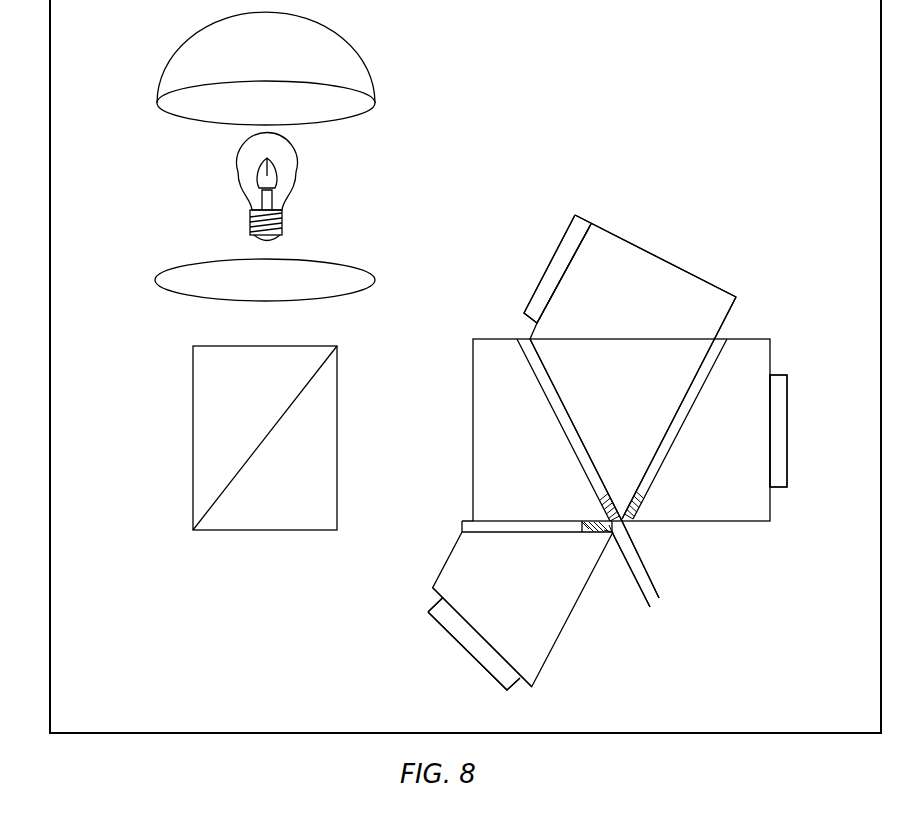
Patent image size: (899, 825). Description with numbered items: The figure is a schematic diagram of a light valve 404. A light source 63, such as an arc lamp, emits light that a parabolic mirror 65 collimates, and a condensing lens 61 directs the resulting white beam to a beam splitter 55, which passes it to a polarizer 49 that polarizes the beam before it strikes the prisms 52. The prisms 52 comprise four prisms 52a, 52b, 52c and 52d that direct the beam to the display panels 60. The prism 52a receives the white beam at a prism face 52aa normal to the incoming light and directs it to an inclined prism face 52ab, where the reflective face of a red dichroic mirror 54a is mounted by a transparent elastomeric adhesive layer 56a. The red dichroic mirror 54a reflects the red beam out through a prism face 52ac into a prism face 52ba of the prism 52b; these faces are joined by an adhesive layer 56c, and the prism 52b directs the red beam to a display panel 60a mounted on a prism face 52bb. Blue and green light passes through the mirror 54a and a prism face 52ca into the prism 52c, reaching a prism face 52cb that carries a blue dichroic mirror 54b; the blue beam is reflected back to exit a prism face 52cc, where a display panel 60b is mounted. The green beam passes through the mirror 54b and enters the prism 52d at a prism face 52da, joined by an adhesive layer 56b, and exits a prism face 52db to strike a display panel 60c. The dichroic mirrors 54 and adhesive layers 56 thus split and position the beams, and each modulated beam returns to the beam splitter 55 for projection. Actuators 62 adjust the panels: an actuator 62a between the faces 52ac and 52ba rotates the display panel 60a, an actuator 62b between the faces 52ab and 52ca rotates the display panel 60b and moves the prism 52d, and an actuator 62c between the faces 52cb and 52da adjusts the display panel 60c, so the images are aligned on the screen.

The light valve 404 is at (183, 760).
The parabolic mirror 65 is at (248, 68).
The light source 63 is at (240, 185).
The condensing lens 61 is at (239, 275).
The beam splitter 55 is at (265, 454).
The polarizer 49 is at (594, 430).
The prisms 52 is at (612, 428).
The prism 52a is at (520, 398).
The prism 52b is at (530, 609).
The prism 52c is at (633, 364).
The prism 52d is at (730, 415).
The prism face 52aa is at (510, 440).
The prism face 52ab is at (557, 501).
The prism face 52ac is at (525, 496).
The prism face 52ba is at (537, 541).
The prism face 52bb is at (498, 637).
The prism face 52ca is at (600, 388).
The prism face 52cb is at (652, 369).
The prism face 52cc is at (588, 274).
The prism face 52da is at (732, 431).
The prism face 52db is at (732, 457).
The dichroic mirror 54 is at (580, 413).
The red dichroic mirror 54a is at (507, 372).
The blue dichroic mirror 54b is at (739, 370).
The transparent elastomeric adhesive layer 56 is at (636, 431).
The transparent elastomeric adhesive layer 56a is at (517, 413).
The transparent elastomeric adhesive layer 56b is at (736, 388).
The transparent elastomeric adhesive layer 56c is at (440, 519).
The display panels 60 is at (566, 520).
The display panel 60a is at (462, 644).
The display panel 60b is at (544, 263).
The display panel 60c is at (813, 431).
The actuators 62 is at (629, 537).
The actuator 62a is at (658, 569).
The actuator 62b is at (663, 558).
The actuator 62c is at (668, 502).